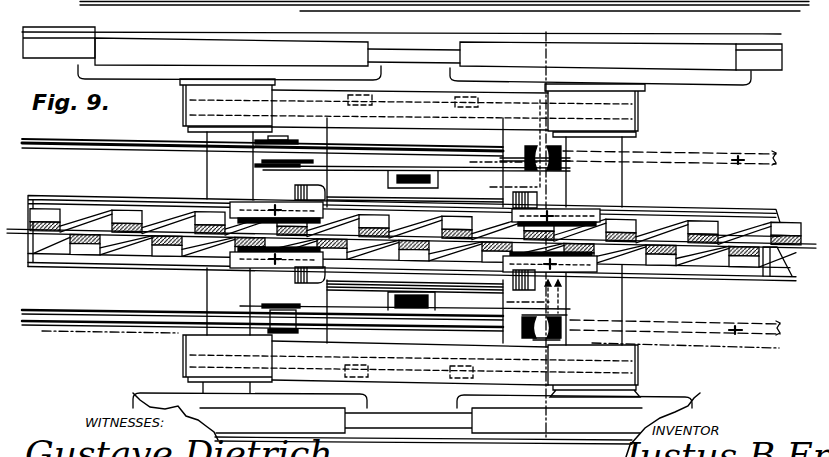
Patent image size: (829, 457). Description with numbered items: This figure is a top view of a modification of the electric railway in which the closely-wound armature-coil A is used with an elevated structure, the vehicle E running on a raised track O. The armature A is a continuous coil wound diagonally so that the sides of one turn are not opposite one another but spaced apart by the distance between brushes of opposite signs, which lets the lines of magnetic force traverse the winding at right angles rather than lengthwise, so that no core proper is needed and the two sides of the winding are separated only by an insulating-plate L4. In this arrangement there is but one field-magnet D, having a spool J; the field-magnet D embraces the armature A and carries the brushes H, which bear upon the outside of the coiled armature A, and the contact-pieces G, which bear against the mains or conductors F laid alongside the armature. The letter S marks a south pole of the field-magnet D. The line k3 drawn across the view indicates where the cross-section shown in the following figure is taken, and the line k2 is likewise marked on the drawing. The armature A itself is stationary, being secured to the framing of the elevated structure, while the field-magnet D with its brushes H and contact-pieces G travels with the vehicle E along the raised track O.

The raised track O is at (42, 34).
The vehicle E is at (402, 230).
The section line k3 k3 is at (554, 227).
The center lines of guide rods k2 is at (411, 348).
The mains or conductors F is at (136, 141).
The armature-coil A is at (62, 202).
The insulating-plate L4 is at (789, 261).
The field-magnet D is at (405, 230).
The south pole S is at (413, 240).
The brushes H is at (257, 202).
The spool J is at (317, 189).
The contact-pieces G is at (292, 147).